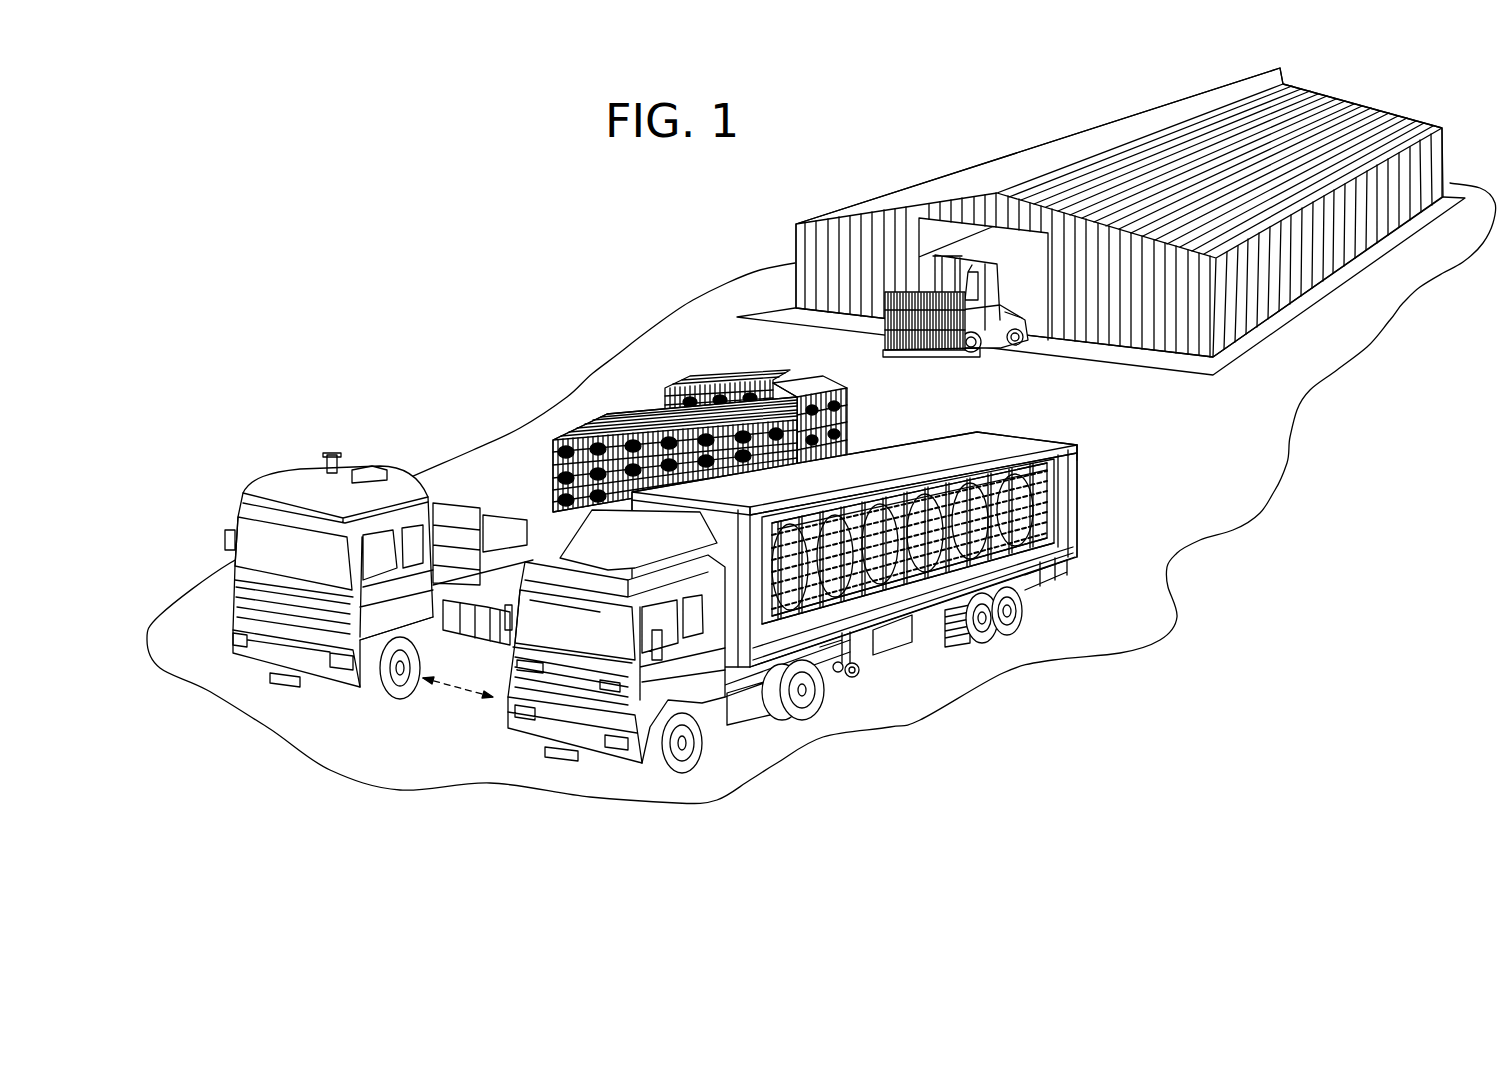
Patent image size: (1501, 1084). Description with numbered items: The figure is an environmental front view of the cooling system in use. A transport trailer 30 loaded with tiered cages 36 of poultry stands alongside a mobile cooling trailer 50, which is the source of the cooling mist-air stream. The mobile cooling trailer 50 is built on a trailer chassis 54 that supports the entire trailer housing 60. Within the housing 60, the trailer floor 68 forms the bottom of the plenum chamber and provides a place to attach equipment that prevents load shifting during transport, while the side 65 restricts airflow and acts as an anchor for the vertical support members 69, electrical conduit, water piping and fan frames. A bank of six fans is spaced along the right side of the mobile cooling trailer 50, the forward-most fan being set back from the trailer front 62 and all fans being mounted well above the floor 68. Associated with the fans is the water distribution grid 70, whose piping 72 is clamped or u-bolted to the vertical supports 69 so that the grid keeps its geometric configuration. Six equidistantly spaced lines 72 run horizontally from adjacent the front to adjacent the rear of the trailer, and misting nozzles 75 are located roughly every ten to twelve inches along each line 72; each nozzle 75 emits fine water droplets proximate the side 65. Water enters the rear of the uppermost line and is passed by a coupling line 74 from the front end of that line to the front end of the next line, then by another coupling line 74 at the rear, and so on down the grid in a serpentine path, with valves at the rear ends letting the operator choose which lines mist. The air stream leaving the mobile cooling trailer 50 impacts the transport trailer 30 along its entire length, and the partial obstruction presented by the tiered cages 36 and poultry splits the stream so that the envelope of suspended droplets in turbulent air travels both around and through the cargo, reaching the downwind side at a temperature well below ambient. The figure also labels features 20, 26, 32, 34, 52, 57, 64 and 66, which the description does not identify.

The produce transport and cooling system 20 is at (1102, 703).
The warehouse 26 is at (1020, 162).
The transport trailer 30 is at (508, 482).
The forklift 32 is at (989, 340).
The pallet of produce crates 34 is at (884, 293).
The tiered cages 36 is at (703, 378).
The mobile cooling trailer 50 is at (757, 677).
The trailer wheels 52 is at (1020, 605).
The trailer chassis 54 is at (1073, 560).
The tractor interchange direction 57 is at (453, 687).
The trailer housing 60 is at (905, 587).
The trailer front 62 is at (777, 713).
The trailer roof 64 is at (865, 457).
The side 65 is at (1063, 540).
The trailer top rail 66 is at (1075, 487).
The trailer floor 68 is at (928, 608).
The vertical supports 69 is at (913, 493).
The water distribution grid 70 is at (847, 605).
The piping 72 is at (993, 480).
The coupling line 74 is at (1050, 497).
The misting nozzles 75 is at (797, 608).